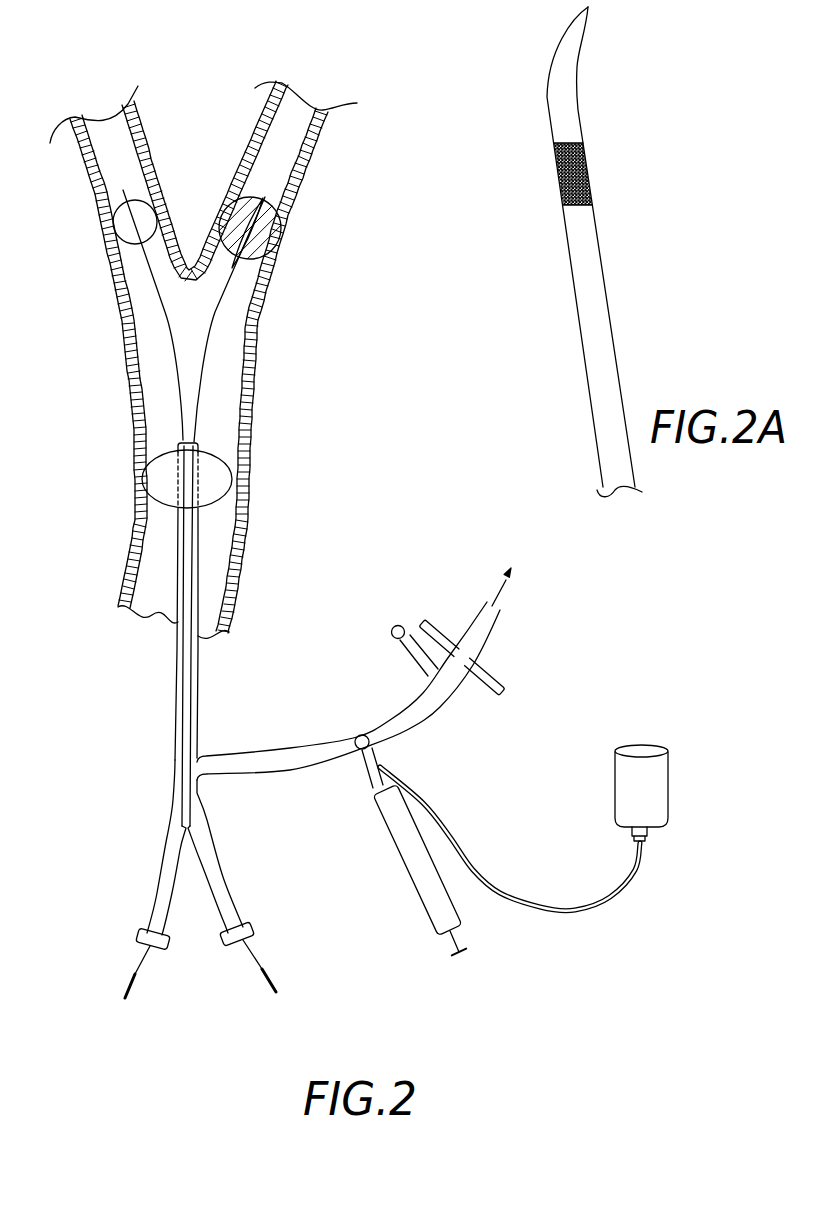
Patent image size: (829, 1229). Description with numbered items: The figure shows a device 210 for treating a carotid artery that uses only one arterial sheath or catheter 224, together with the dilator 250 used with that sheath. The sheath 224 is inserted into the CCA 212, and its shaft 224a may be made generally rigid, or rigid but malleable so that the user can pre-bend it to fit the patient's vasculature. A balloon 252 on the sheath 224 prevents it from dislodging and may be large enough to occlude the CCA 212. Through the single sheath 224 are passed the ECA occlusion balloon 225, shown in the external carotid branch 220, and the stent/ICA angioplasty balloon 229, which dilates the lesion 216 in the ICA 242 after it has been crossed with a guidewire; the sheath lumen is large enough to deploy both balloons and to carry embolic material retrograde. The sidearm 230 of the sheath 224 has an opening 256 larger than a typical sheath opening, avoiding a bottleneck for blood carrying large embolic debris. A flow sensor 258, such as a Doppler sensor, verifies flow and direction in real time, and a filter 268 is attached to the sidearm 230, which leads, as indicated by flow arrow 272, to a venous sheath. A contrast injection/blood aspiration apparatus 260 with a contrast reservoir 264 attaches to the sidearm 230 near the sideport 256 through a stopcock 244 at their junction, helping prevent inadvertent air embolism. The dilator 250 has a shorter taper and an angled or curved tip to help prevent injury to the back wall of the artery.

In FIG. 2, the device 210 is at (452, 71).
In FIG. 2, the CCA 212 is at (128, 533).
In FIG. 2, the first branch vessel 220 is at (85, 175).
In FIG. 2, the ICA 242 is at (313, 150).
In FIG. 2, the ECA occlusion balloon 225 is at (146, 180).
In FIG. 2, the lesion 216 is at (273, 207).
In FIG. 2, the stent/ICA angioplasty balloon 229 is at (233, 257).
In FIG. 2, the balloon 252 is at (212, 500).
In FIG. 2, the arterial sheath 224 is at (158, 720).
In FIG. 2A, the arterial sheath 224 is at (645, 322).
In FIG. 2, the shaft 224a is at (177, 655).
In FIG. 2, the sidearm 230 is at (250, 757).
In FIG. 2, the opening 256 is at (227, 806).
In FIG. 2, the flow sensor 258 is at (398, 608).
In FIG. 2, the filter 268 is at (520, 667).
In FIG. 2, the flow arrow 272 is at (502, 590).
In FIG. 2, the stopcock 244 is at (413, 755).
In FIG. 2, the contrast injection/blood aspiration apparatus 260 is at (483, 995).
In FIG. 2, the contrast reservoir 264 is at (692, 783).
In FIG. 2A, the dilator 250 is at (602, 117).